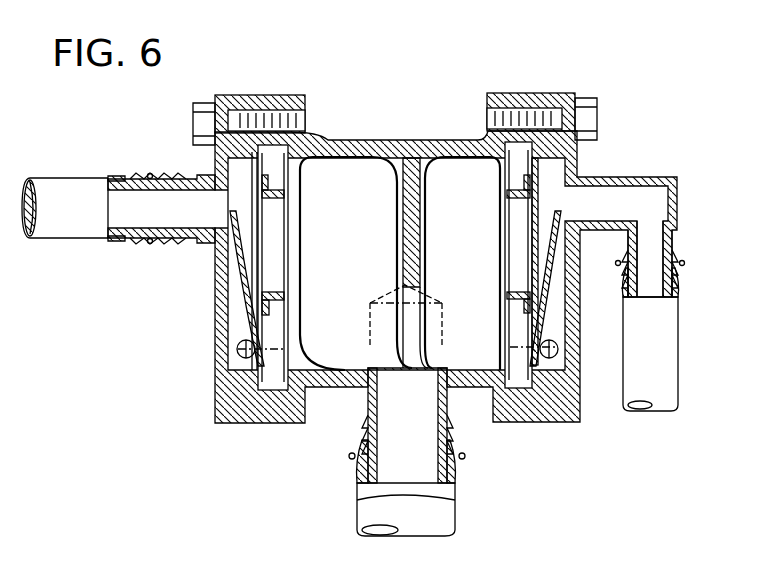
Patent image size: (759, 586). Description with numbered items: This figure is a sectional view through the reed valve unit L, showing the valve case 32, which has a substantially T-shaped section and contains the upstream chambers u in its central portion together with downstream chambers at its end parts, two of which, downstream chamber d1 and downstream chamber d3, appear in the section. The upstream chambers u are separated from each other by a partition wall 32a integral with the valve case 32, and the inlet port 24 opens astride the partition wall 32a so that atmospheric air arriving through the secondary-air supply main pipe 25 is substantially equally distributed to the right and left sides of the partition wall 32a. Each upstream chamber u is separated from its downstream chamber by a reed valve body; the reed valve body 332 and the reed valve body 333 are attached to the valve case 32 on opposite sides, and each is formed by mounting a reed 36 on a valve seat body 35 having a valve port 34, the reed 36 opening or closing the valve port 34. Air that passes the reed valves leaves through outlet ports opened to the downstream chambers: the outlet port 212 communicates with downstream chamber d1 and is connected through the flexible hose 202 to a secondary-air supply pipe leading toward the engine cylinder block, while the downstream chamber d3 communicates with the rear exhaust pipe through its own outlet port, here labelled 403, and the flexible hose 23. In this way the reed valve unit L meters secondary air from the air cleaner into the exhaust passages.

The valve case 32 is at (332, 142).
The partition wall 32a is at (417, 198).
The upstream chambers u is at (375, 170).
The valve port 34 is at (265, 200).
The valve seat body 35 is at (275, 305).
The reed 36 is at (243, 255).
The reed valve body 332 is at (277, 392).
The reed valve body 333 is at (520, 393).
The downstream chamber d1 is at (235, 313).
The downstream chamber d3 is at (573, 163).
The flexible hose 202 is at (62, 230).
The outlet port 212 is at (145, 225).
The inlet port 24 is at (377, 392).
The secondary-air supply main pipe 25 is at (450, 508).
The outlet pipe 403 is at (668, 287).
The flexible hose 23 is at (672, 345).
The reed valve unit L is at (456, 93).